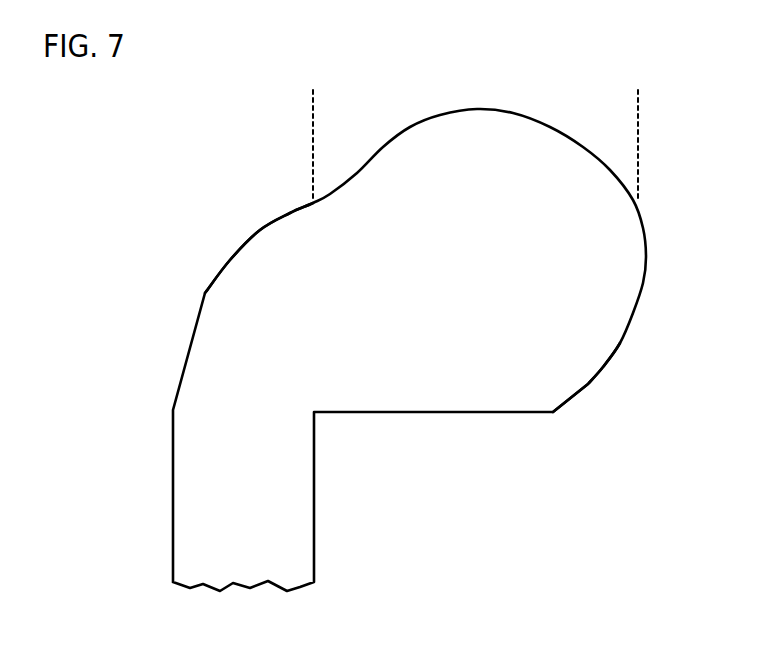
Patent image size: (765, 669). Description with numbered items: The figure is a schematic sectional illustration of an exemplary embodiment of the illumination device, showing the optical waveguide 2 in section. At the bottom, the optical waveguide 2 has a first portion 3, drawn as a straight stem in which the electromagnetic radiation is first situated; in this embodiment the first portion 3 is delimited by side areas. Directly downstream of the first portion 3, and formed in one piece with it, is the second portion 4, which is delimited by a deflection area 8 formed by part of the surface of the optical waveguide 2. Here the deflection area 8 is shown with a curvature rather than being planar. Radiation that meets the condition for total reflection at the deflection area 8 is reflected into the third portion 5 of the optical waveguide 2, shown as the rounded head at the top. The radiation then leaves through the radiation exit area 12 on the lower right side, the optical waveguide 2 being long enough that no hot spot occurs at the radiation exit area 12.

The optical waveguide 2 is at (156, 447).
The first portion 3 is at (68, 410).
The second portion 4 is at (68, 255).
The third portion 5 is at (638, 84).
The deflection area 8 is at (207, 292).
The radiation exit area 12 is at (588, 384).